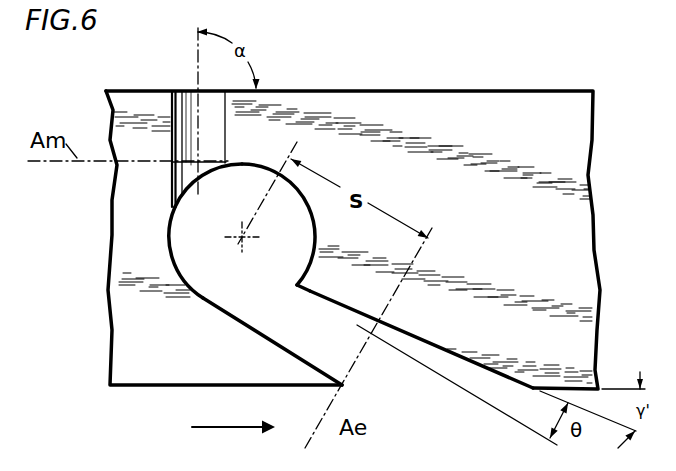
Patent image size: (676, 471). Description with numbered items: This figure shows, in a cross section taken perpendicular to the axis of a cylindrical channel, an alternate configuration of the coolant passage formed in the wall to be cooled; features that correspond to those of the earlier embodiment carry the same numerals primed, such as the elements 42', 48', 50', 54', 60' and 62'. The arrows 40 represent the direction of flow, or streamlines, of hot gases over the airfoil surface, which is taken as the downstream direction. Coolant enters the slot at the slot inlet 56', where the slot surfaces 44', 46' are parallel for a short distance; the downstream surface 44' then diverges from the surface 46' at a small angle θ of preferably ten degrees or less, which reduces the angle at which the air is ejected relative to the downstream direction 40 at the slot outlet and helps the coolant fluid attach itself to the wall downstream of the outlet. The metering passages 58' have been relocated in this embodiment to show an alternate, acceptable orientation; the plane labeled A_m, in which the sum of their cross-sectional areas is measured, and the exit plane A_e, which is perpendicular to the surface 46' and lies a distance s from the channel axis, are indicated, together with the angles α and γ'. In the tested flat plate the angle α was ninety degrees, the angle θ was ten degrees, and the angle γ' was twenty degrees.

The arrows 40 is at (229, 424).
The tool body 42' is at (353, 256).
The downstream slot surface 44' is at (421, 334).
The slot surface 46' is at (272, 341).
The reference line 48' is at (457, 385).
The circular cavity 50' is at (297, 224).
The cavity wall 54' is at (166, 252).
The slot inlet 56' is at (289, 281).
The metering passages 58' is at (176, 134).
The slot 60' is at (211, 114).
The cavity opening 62' is at (211, 149).